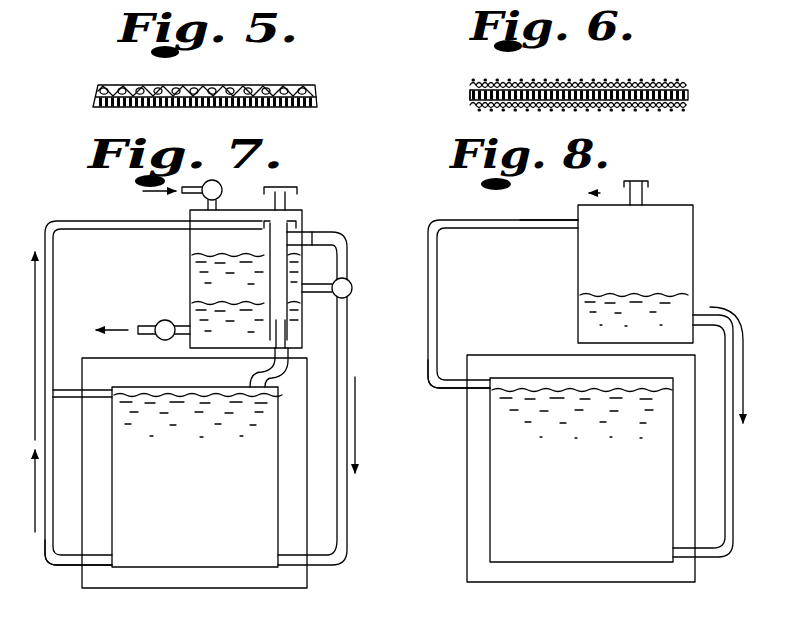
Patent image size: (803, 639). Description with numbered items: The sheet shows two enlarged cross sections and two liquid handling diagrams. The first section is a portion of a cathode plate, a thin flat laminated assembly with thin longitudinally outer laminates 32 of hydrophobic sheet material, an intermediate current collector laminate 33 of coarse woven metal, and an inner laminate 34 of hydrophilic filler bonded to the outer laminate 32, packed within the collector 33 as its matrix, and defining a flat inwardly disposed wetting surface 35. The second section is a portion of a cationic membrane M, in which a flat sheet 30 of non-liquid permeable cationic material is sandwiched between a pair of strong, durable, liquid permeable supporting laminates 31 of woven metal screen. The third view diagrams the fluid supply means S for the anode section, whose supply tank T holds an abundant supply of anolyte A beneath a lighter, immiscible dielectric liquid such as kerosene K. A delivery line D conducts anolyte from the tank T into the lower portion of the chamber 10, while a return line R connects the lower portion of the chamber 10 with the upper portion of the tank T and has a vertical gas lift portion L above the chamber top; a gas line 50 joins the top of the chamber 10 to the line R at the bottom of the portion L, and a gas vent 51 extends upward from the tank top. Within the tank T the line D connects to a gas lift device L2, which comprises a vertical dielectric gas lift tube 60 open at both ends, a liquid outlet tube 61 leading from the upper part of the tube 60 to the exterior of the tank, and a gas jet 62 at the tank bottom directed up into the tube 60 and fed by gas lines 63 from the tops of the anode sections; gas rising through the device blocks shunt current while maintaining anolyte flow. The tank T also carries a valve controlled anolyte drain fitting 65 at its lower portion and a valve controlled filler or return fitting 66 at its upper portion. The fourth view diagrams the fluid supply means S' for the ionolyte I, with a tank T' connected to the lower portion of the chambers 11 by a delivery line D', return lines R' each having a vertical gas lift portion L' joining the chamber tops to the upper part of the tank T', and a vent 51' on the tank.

In FIG. 6, the flat sheet 30 is at (468, 100).
In FIG. 6, the supporting laminate 31 is at (600, 82).
In FIG. 5, the outer laminate 32 is at (96, 104).
In FIG. 5, the current collector laminate 33 is at (278, 87).
In FIG. 5, the inner laminate 34 is at (122, 86).
In FIG. 5, the wetting surface 35 is at (256, 85).
In FIG. 6, the cationic membrane M is at (462, 97).
In FIG. 7, the chamber 10 is at (194, 473).
In FIG. 8, the chamber 11 is at (581, 468).
In FIG. 7, the anolyte A is at (197, 477).
In FIG. 7, the kerosene K is at (246, 269).
In FIG. 8, the ionolyte I is at (581, 470).
In FIG. 7, the supply tank T is at (209, 279).
In FIG. 8, the tank T' is at (600, 274).
In FIG. 7, the gas lift portion L is at (112, 373).
In FIG. 8, the gas lift portion L' is at (503, 304).
In FIG. 7, the gas lift device L2 is at (266, 236).
In FIG. 7, the fluid supply means S is at (104, 183).
In FIG. 8, the fluid supply means S' is at (492, 194).
In FIG. 7, the delivery line D is at (334, 398).
In FIG. 8, the delivery line D' is at (710, 456).
In FIG. 7, the return line R is at (78, 577).
In FIG. 8, the return line R' is at (442, 392).
In FIG. 7, the gas line 50 is at (58, 389).
In FIG. 7, the gas vent 51 is at (307, 189).
In FIG. 8, the vent 51' is at (659, 181).
In FIG. 7, the gas lift tube 60 is at (290, 268).
In FIG. 7, the liquid outlet tube 61 is at (312, 236).
In FIG. 7, the gas jet 62 is at (290, 326).
In FIG. 7, the gas line 63 is at (272, 368).
In FIG. 7, the anolyte drain fitting 65 is at (158, 322).
In FIG. 7, the filler fitting 66 is at (222, 184).